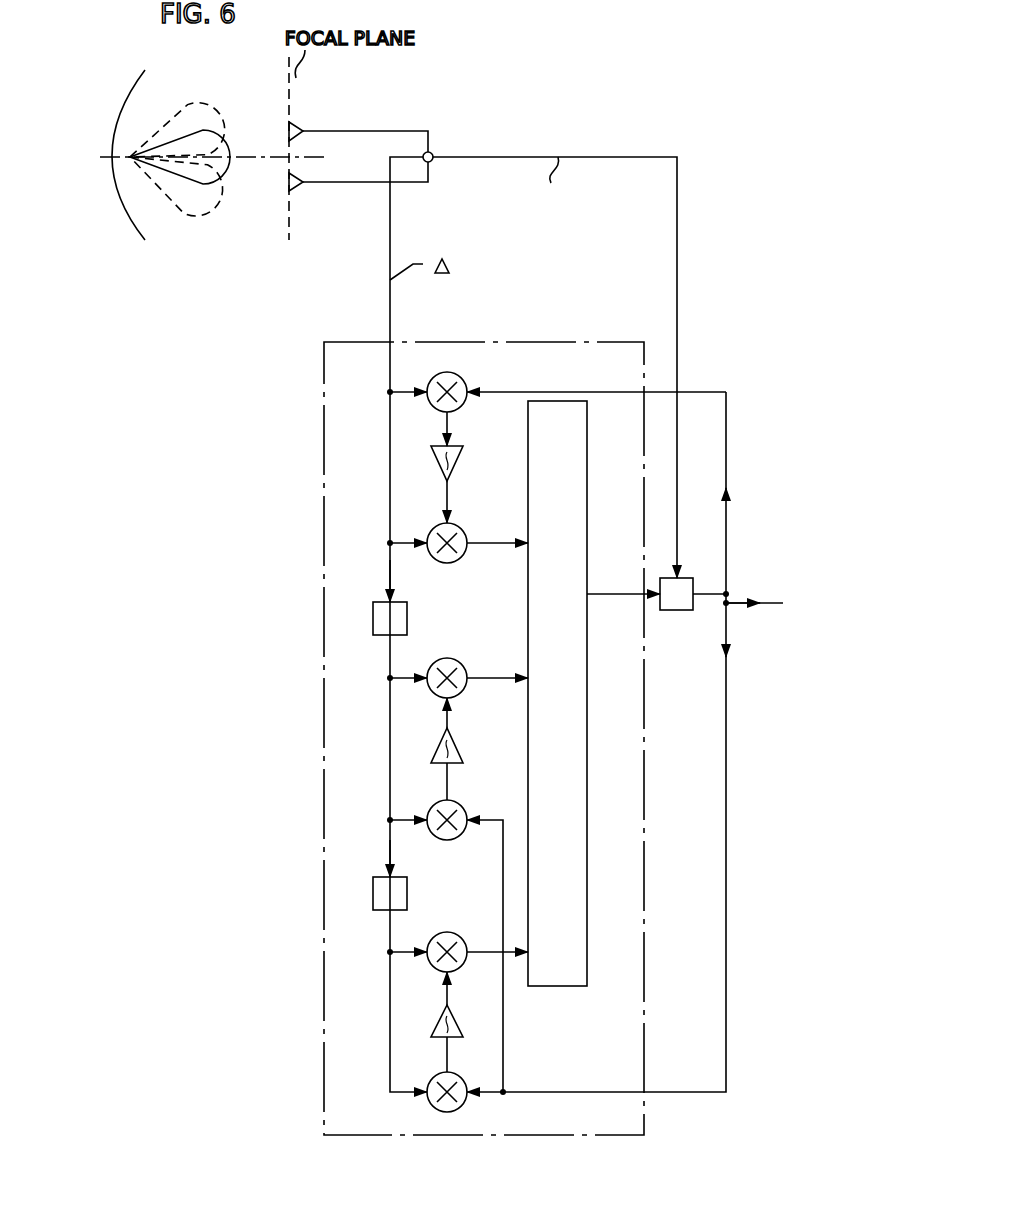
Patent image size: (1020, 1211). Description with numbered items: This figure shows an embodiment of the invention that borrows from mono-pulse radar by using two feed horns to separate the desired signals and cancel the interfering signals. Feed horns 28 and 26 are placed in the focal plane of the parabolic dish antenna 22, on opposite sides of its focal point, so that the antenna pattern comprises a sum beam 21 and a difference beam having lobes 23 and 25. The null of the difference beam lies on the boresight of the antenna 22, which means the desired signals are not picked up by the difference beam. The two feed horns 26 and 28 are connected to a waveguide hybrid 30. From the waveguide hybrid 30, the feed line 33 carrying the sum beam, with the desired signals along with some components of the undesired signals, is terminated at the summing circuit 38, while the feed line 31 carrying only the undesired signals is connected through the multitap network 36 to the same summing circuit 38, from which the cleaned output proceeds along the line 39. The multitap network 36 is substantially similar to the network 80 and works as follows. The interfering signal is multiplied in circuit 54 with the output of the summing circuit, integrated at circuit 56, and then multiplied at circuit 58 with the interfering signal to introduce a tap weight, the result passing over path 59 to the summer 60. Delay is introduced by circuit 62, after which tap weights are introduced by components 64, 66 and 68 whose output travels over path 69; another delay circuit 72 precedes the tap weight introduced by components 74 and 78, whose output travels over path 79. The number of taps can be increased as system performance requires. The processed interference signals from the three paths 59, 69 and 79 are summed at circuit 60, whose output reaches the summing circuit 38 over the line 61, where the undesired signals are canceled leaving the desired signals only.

The sum beam 21 is at (257, 172).
The parabolic dish antenna 22 is at (142, 64).
The difference beam lobe 23 is at (213, 93).
The difference beam lobe 25 is at (200, 230).
The feed horn 26 is at (338, 182).
The feed horn 28 is at (336, 131).
The waveguide hybrid 30 is at (432, 153).
The feed line 31 is at (390, 325).
The feed line 33 is at (677, 283).
The multitap network 36 is at (324, 465).
The summing circuit 38 is at (686, 613).
The output line to modem 39 is at (743, 603).
The multiplying circuit 54 is at (458, 384).
The integrating circuit 56 is at (463, 447).
The multiplying circuit 58 is at (460, 527).
The path 59 is at (504, 548).
The summer 60 is at (587, 447).
The output line 61 is at (628, 592).
The delay circuit 62 is at (373, 602).
The multiplying circuit 64 is at (453, 803).
The integrating circuit 66 is at (440, 738).
The multiplying circuit 68 is at (436, 662).
The path 69 is at (497, 681).
The delay circuit 72 is at (373, 880).
The multiplying circuit 74 is at (437, 1075).
The multiplying circuit 78 is at (437, 933).
The path 79 is at (511, 956).
The network 80 is at (324, 785).